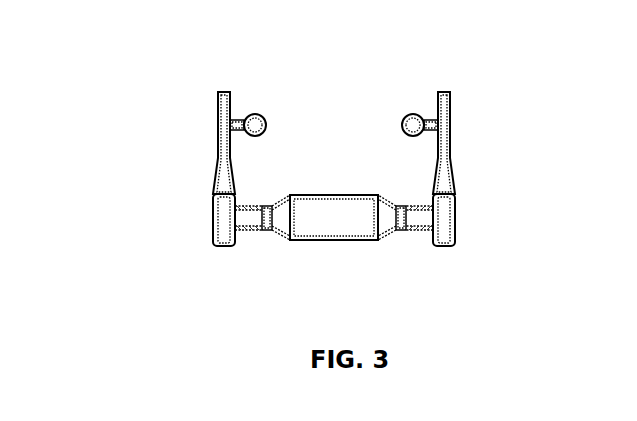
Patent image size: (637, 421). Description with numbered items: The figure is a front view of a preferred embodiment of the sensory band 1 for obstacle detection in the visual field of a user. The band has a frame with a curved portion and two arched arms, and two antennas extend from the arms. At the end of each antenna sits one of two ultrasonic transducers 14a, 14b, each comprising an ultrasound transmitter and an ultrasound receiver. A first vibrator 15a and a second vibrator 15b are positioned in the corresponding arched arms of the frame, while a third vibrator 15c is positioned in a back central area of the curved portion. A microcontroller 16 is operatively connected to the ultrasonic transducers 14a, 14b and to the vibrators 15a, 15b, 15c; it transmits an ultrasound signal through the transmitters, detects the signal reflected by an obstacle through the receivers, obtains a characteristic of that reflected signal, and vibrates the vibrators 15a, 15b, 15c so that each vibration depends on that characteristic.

The sensory band 1 is at (166, 106).
The ultrasonic transducer 14a is at (253, 114).
The ultrasonic transducer 14b is at (413, 114).
The first vibrator 15a is at (213, 221).
The second vibrator 15b is at (455, 222).
The third vibrator 15c is at (352, 215).
The microcontroller 16 is at (330, 215).